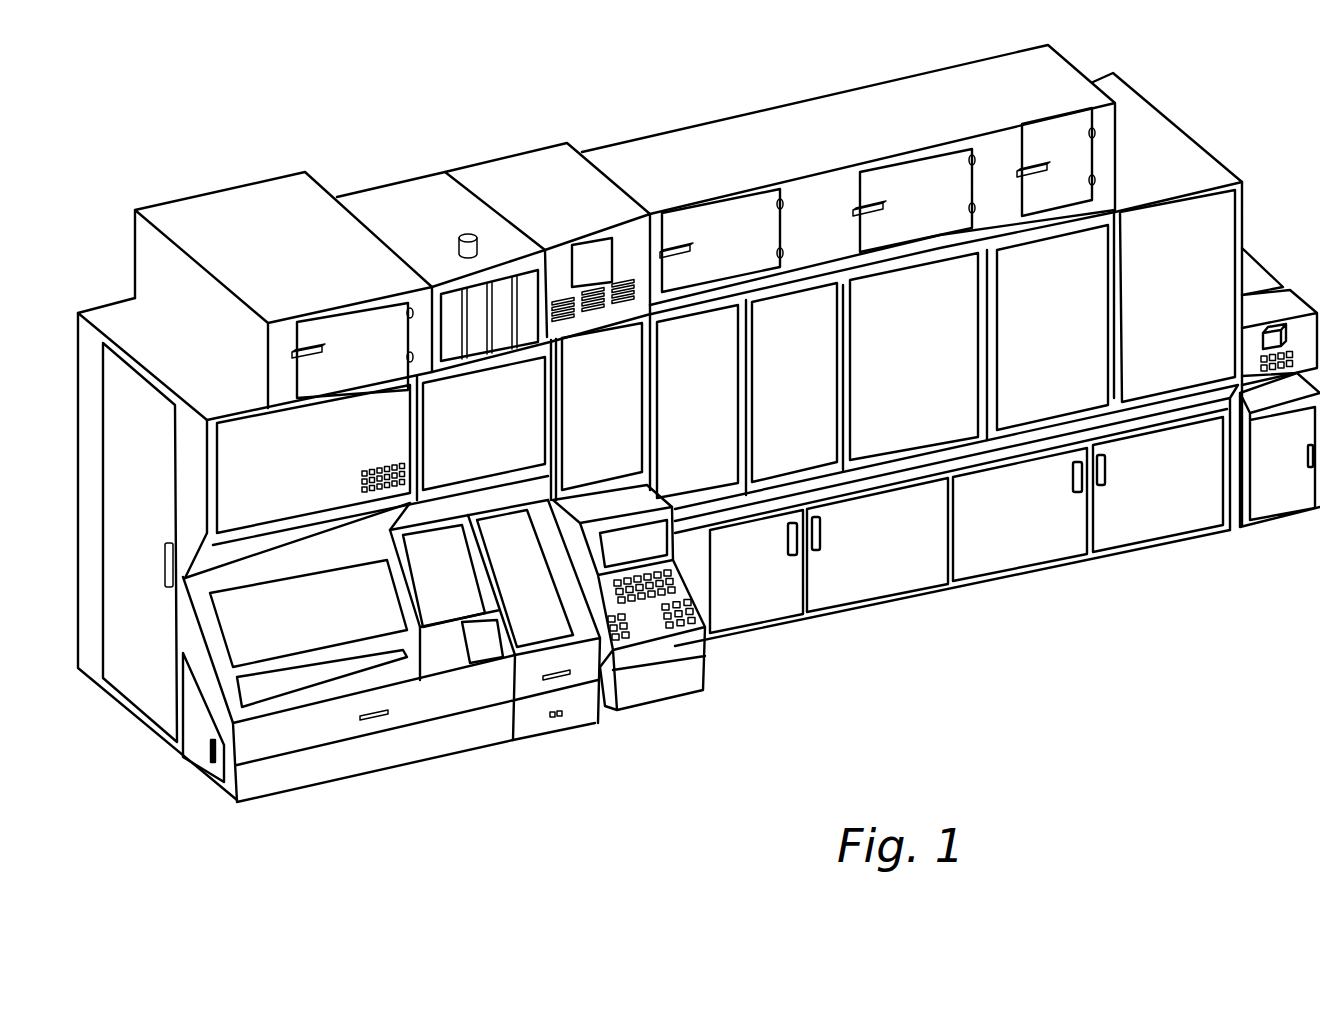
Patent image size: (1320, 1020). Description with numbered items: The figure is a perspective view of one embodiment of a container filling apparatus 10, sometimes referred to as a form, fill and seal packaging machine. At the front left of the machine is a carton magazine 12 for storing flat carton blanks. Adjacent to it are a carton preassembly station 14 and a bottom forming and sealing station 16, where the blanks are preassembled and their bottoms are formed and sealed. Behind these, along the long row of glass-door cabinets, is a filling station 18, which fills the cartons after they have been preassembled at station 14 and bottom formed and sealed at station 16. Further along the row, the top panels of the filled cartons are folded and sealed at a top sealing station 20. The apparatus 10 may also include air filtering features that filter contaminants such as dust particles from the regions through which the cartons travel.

The container filling apparatus 10 is at (332, 129).
The carton magazine 12 is at (300, 615).
The carton preassembly station 14 is at (530, 600).
The bottom forming and sealing station 16 is at (488, 422).
The filling station 18 is at (795, 385).
The top sealing station 20 is at (952, 345).